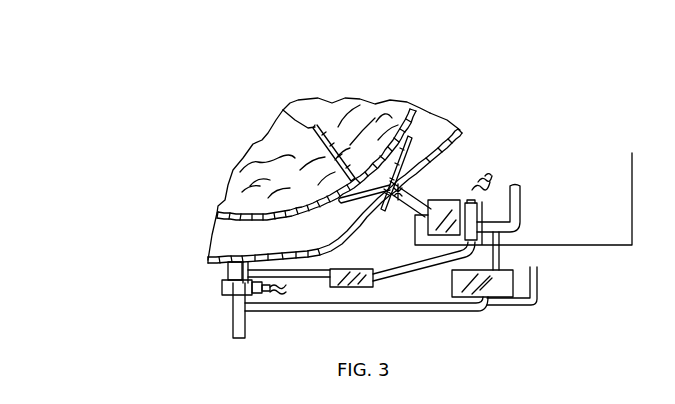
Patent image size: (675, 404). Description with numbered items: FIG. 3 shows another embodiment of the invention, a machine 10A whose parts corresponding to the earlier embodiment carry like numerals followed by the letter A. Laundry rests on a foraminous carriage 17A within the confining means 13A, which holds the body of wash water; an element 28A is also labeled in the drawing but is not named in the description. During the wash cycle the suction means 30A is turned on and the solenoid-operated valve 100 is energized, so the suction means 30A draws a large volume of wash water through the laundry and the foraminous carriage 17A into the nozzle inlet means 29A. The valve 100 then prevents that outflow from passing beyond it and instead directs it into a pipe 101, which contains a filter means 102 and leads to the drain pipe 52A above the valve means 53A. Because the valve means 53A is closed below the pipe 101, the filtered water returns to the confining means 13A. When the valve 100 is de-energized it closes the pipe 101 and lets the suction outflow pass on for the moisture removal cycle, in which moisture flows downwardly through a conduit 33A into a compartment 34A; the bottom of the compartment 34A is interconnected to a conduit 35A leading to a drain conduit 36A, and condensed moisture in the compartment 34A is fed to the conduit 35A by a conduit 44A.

The machine 10A is at (503, 94).
The confining means 13A is at (462, 142).
The foraminous carriage 17A is at (238, 219).
The hair mass 28A is at (283, 110).
The nozzle inlet means 29A is at (430, 113).
The suction means 30A is at (442, 207).
The conduit 33A is at (500, 259).
The compartment 34A is at (502, 290).
The conduit 35A is at (368, 312).
The drain conduit 36A is at (247, 327).
The conduit 44A is at (537, 290).
The drain pipe 52A is at (243, 262).
The valve means 53A is at (222, 285).
The solenoid-operated valve 100 is at (500, 193).
The pipe 101 is at (402, 277).
The filter means 102 is at (355, 270).